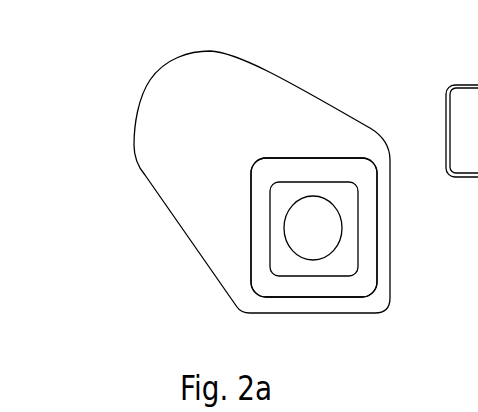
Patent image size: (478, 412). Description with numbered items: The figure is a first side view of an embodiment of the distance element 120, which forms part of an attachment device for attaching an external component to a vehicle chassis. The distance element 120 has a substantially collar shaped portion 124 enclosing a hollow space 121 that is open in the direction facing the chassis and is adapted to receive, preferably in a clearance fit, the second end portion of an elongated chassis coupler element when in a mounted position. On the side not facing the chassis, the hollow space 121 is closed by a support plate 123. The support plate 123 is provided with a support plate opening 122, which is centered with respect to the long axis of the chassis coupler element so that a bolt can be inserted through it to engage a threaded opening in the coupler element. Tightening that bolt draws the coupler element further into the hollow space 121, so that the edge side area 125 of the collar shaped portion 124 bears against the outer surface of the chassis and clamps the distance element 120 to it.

The distance element 120 is at (251, 202).
The hollow space 121 is at (360, 259).
The support plate opening 122 is at (309, 239).
The support plate 123 is at (193, 82).
The collar shaped portion 124 is at (316, 158).
The edge side area 125 is at (262, 279).